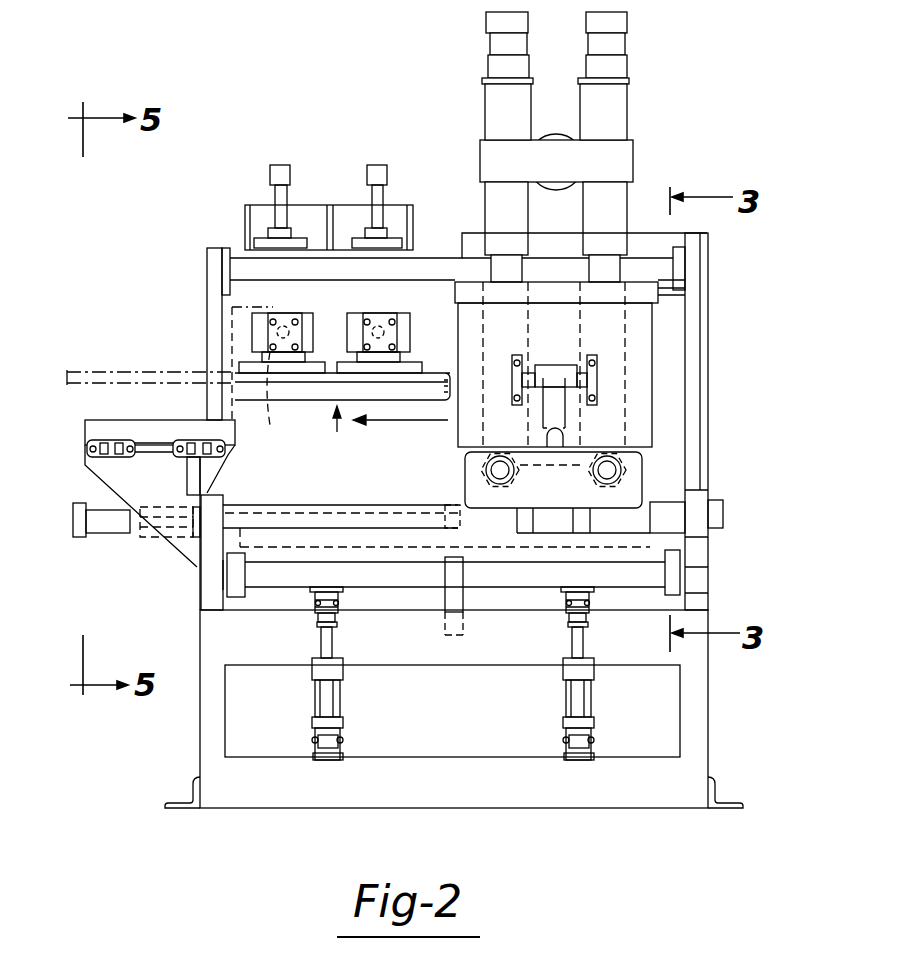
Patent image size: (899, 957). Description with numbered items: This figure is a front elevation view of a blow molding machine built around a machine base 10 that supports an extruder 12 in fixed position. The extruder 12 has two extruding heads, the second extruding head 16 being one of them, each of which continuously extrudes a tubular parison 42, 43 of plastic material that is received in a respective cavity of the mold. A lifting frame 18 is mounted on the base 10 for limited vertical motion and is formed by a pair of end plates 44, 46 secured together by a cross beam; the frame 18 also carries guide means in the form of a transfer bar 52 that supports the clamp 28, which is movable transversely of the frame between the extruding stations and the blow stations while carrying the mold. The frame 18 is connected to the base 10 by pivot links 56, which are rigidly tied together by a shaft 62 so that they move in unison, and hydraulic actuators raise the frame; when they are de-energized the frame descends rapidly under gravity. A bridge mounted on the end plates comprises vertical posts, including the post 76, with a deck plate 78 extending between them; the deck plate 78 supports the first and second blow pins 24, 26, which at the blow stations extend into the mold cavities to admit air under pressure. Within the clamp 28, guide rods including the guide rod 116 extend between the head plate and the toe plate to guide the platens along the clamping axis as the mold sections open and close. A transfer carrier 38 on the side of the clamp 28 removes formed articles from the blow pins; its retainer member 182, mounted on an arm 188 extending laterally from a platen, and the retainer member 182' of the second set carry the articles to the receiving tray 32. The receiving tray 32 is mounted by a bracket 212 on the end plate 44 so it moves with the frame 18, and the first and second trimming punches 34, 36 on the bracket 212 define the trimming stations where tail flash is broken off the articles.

The machine base 10 is at (716, 706).
The extruder 12 is at (426, 161).
The second extruding head 16 is at (627, 200).
The lifting frame 18 is at (352, 493).
The first blow pin 24 is at (291, 197).
The second blow pin 26 is at (367, 196).
The clamp 28 is at (670, 386).
The receiving tray 32 is at (87, 421).
The first trimming punch 34 is at (100, 457).
The second trimming punch 36 is at (187, 458).
The transfer carrier 38 is at (335, 423).
The tubular parison 42 is at (528, 300).
The tubular parison 43 is at (625, 300).
The end plate 44 is at (204, 557).
The end plate 46 is at (712, 551).
The transfer bar 52 is at (383, 503).
The pivot links 56 is at (235, 598).
The shaft 62 is at (390, 563).
The vertical post 76 is at (698, 318).
The deck plate 78 is at (441, 279).
The guide rod 116 is at (608, 470).
The retainer member 182 is at (290, 328).
The retainer member 182' is at (379, 328).
The arm 188 is at (326, 398).
The bracket 212 is at (120, 482).